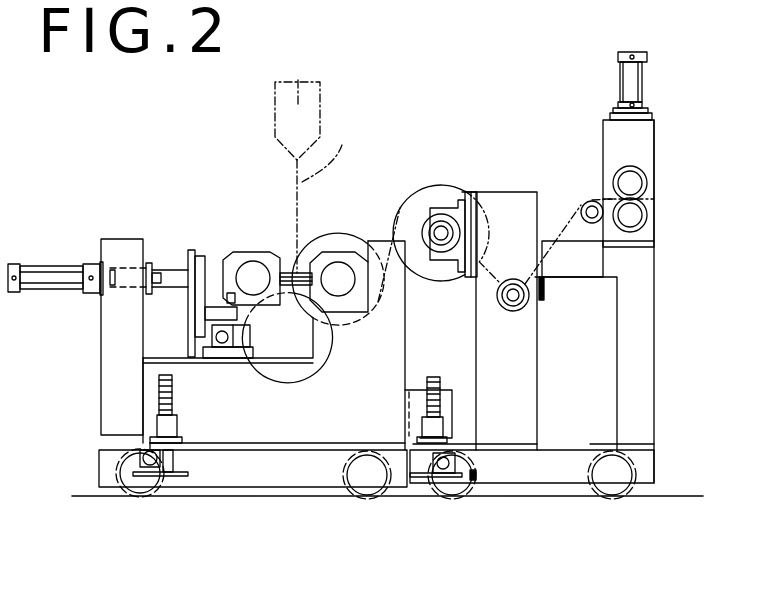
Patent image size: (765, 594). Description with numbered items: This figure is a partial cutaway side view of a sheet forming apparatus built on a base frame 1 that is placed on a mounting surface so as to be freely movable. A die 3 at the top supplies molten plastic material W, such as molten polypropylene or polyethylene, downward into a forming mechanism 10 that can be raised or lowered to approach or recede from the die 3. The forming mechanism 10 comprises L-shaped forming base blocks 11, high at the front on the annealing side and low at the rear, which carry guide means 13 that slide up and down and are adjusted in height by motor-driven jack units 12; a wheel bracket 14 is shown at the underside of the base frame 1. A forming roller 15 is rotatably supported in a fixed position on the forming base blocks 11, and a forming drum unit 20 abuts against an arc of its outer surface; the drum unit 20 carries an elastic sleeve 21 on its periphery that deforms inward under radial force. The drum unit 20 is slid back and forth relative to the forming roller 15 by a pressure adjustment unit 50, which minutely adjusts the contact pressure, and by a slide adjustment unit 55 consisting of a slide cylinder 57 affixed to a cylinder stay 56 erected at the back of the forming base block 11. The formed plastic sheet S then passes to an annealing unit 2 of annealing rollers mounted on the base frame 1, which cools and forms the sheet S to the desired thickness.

The base frame 1 is at (312, 465).
The annealing unit 2 is at (442, 185).
The die 3 is at (298, 80).
The forming mechanism 10 is at (263, 158).
The forming base block 11 is at (150, 387).
The jack unit 12 is at (200, 391).
The guide means 13 is at (175, 425).
The wheel bracket 14 is at (167, 462).
The forming roller 15 is at (343, 232).
The forming drum unit 20 is at (256, 281).
The sleeve 21 is at (242, 232).
The pressure adjustment unit 50 is at (303, 292).
The slide adjustment unit 55 is at (98, 292).
The cylinder stay 56 is at (125, 247).
The slide cylinder 57 is at (55, 238).
The molten plastic material W is at (328, 193).
The plastic sheet S is at (386, 244).